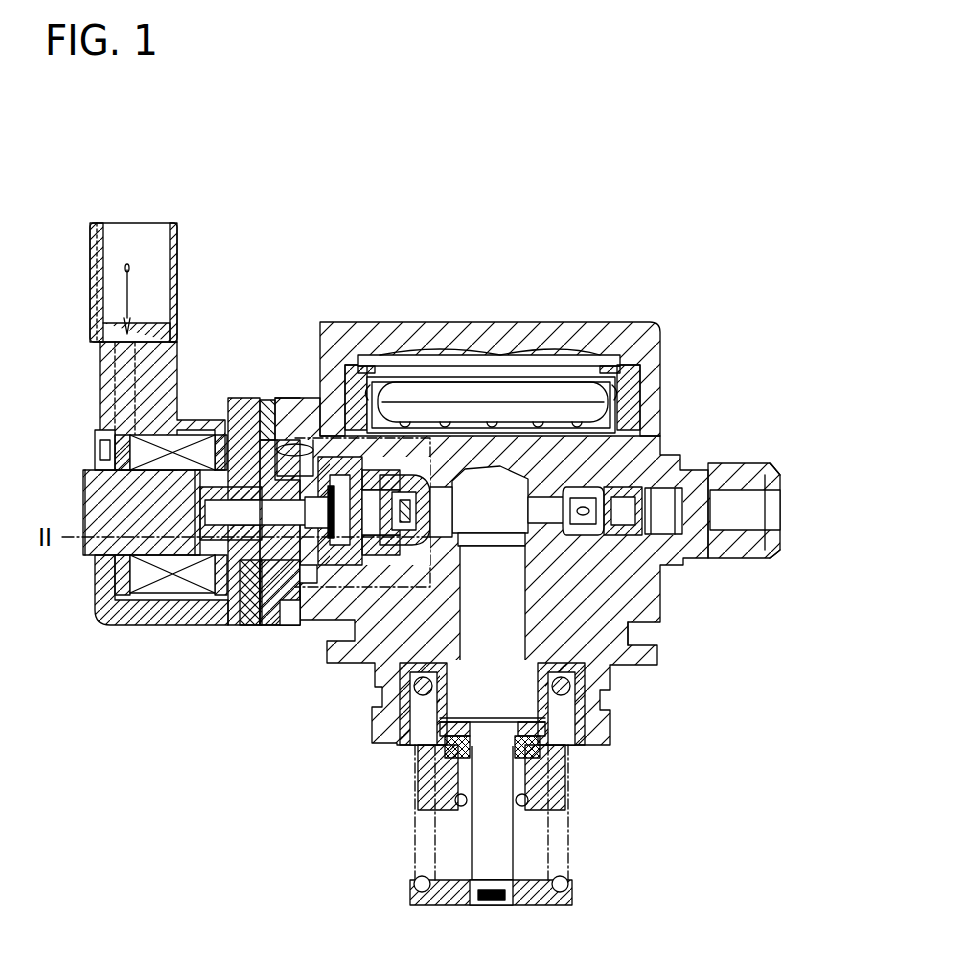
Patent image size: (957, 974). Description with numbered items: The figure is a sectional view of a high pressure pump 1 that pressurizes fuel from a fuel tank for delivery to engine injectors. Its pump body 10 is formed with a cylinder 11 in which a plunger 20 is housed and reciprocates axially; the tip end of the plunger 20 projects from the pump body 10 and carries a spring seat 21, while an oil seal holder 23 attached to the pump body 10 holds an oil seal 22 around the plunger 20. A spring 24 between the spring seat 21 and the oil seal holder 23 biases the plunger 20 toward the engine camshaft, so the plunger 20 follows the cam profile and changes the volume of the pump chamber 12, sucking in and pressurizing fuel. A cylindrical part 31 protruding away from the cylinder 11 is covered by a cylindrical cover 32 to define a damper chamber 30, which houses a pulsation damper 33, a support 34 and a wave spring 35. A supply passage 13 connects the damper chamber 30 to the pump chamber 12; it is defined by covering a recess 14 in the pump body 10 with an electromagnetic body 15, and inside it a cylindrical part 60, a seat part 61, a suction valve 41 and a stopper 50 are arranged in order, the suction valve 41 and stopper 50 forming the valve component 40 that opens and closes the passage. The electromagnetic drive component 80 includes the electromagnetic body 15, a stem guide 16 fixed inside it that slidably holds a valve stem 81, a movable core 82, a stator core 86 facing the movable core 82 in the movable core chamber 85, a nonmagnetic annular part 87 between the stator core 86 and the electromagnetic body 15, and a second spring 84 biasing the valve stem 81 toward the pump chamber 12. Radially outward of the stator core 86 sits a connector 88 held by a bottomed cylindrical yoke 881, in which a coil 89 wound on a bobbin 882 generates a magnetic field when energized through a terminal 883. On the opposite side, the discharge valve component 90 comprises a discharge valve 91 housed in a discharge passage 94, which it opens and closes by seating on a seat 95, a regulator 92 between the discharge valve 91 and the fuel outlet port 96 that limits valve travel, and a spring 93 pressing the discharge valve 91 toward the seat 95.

The high pressure pump 1 is at (660, 202).
The pump body 10 is at (600, 665).
The cylinder 11 is at (586, 630).
The pump chamber 12 is at (556, 448).
The supply passage 13 is at (300, 440).
The recess 14 is at (272, 612).
The electromagnetic body 15 is at (234, 415).
The stem guide 16 is at (256, 592).
The plunger 20 is at (590, 648).
The spring seat 21 is at (438, 906).
The oil seal 22 is at (545, 772).
The oil seal holder 23 is at (565, 720).
The spring 24 is at (570, 862).
The damper chamber 30 is at (356, 380).
The cylindrical part 31 is at (645, 410).
The cylindrical cover 32 is at (446, 345).
The pulsation damper 33 is at (500, 380).
The support 34 is at (616, 394).
The wave spring 35 is at (596, 362).
The valve component 40 is at (283, 395).
The suction valve 41 is at (385, 580).
The stopper 50 is at (392, 602).
The cylindrical part 60 is at (315, 620).
The seat part 61 is at (342, 576).
The electromagnetic drive component 80 is at (133, 630).
The valve stem 81 is at (240, 622).
The movable core 82 is at (216, 576).
The second spring 84 is at (284, 614).
The movable core chamber 85 is at (262, 405).
The stator core 86 is at (110, 499).
The annular part 87 is at (196, 580).
The connector 88 is at (106, 402).
The coil 89 is at (100, 454).
The discharge valve component 90 is at (665, 483).
The discharge valve 91 is at (640, 528).
The regulator 92 is at (730, 485).
The spring 93 is at (675, 562).
The discharge passage 94 is at (700, 505).
The seat 95 is at (625, 540).
The fuel outlet port 96 is at (781, 527).
The cylindrical yoke 881 is at (105, 614).
The bobbin 882 is at (120, 580).
The terminal 883 is at (127, 270).